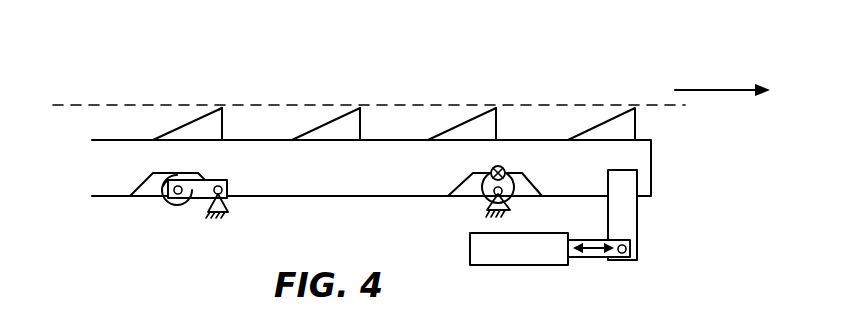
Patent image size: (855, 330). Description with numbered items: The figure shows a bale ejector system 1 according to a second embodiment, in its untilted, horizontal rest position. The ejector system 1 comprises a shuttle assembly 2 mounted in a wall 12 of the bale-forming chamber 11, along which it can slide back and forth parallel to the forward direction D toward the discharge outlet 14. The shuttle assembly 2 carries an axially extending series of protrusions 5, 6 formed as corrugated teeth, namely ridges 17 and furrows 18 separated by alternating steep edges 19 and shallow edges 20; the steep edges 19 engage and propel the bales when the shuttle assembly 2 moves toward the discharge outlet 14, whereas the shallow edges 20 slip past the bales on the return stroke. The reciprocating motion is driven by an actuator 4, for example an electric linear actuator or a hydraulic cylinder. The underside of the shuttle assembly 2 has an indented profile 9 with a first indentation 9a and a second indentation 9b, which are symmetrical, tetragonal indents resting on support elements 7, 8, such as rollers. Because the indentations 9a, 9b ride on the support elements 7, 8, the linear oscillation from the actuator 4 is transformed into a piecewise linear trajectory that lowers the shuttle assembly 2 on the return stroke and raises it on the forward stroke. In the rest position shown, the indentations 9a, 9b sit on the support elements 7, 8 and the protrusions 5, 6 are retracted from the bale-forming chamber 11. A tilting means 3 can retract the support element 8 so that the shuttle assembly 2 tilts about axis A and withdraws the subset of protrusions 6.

The ejector system 1 is at (643, 36).
The shuttle assembly 2 is at (74, 175).
The tilting means 3 is at (207, 206).
The actuator 4 is at (518, 265).
The protrusions 5 is at (622, 108).
The subset of protrusions 6 is at (187, 79).
The support element 7 is at (516, 192).
The support element 8 is at (167, 204).
The indented profile 9 is at (651, 157).
The first indentation 9a is at (455, 175).
The second indentation 9b is at (198, 180).
The bale-forming chamber 11 is at (90, 66).
The wall 12 is at (80, 105).
The discharge outlet 14 is at (713, 140).
The ridges 17 is at (352, 108).
The furrows 18 is at (266, 140).
The steep edges 19 is at (223, 127).
The shallow edges 20 is at (213, 106).